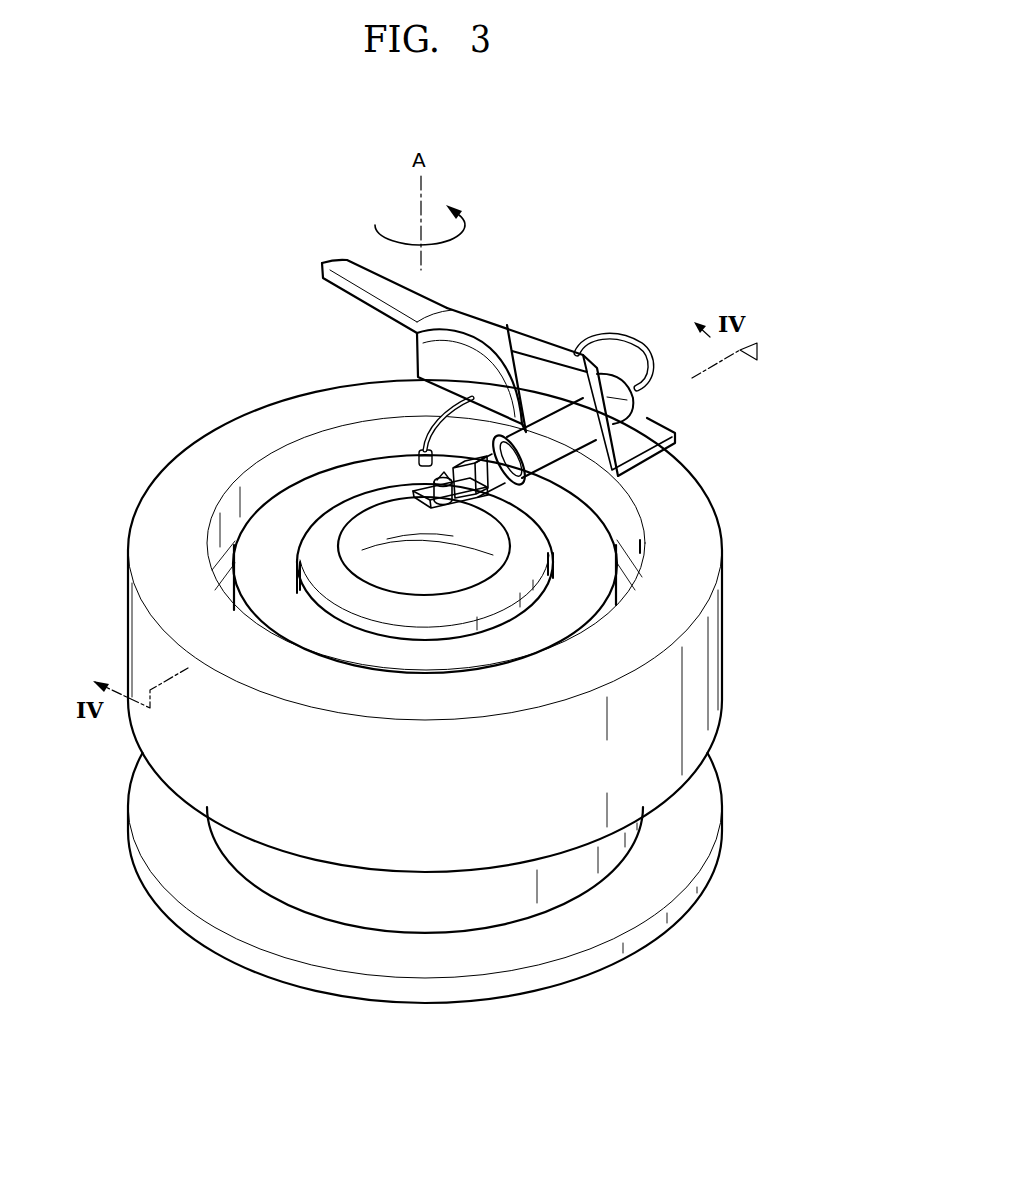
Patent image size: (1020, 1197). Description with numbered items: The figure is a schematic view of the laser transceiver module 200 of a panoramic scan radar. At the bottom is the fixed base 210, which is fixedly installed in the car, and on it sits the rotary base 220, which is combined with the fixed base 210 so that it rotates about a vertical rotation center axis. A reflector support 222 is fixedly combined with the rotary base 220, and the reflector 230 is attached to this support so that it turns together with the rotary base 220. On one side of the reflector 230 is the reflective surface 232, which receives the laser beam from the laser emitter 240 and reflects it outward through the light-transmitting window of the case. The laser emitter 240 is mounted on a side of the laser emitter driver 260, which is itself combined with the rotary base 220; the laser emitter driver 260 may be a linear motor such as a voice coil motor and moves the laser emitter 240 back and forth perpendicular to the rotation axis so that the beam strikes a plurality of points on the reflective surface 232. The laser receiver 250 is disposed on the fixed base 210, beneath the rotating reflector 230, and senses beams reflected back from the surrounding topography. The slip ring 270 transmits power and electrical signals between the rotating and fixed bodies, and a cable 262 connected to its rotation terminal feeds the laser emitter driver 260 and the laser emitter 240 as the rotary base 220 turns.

The laser transceiver module 200 is at (213, 268).
The fixed base 210 is at (572, 880).
The rotary base 220 is at (700, 531).
The reflector support 222 is at (528, 332).
The reflector 230 is at (343, 262).
The reflective surface 232 is at (437, 350).
The laser emitter 240 is at (437, 470).
The laser receiver 250 is at (367, 537).
The laser emitter driver 260 is at (625, 403).
The cable 262 is at (620, 340).
The slip ring 270 is at (583, 531).